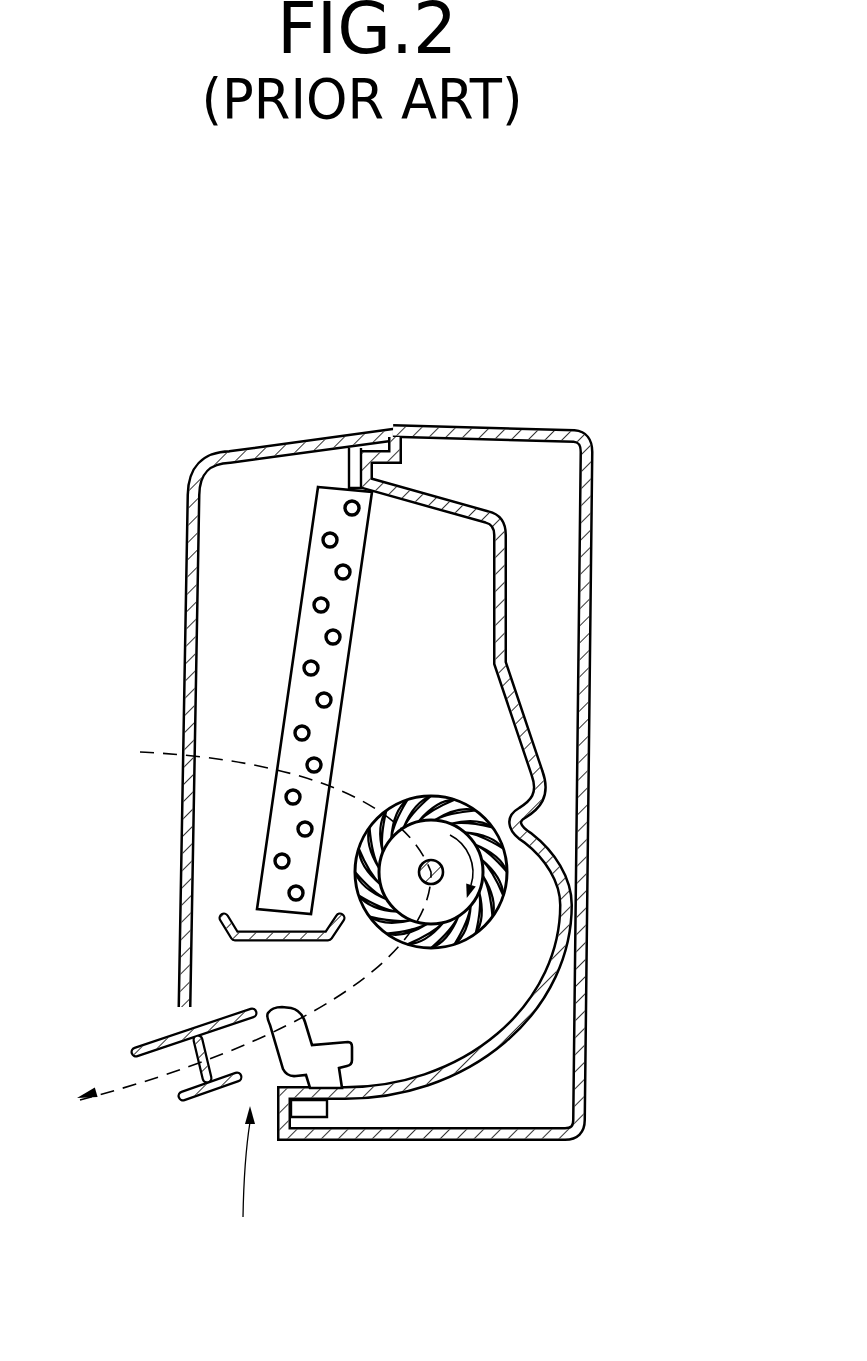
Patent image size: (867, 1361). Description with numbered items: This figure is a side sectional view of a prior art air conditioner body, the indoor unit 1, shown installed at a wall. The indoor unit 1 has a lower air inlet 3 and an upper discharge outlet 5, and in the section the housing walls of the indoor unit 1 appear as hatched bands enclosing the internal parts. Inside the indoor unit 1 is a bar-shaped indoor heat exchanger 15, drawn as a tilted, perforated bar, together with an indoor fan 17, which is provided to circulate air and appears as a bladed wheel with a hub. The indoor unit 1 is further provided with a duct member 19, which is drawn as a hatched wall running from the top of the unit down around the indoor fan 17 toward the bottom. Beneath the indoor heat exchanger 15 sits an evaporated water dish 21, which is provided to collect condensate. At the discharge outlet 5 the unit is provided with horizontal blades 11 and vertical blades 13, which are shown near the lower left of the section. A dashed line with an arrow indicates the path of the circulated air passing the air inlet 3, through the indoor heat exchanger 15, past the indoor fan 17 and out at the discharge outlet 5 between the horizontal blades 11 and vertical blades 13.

The indoor unit 1 is at (622, 511).
The air inlet 3 is at (185, 628).
The discharge outlet 5 is at (246, 1183).
The horizontal blades 11 is at (157, 1042).
The vertical blades 13 is at (330, 1057).
The indoor heat exchanger 15 is at (330, 495).
The indoor fan 17 is at (503, 883).
The duct member 19 is at (523, 720).
The evaporated water dish 21 is at (220, 917).